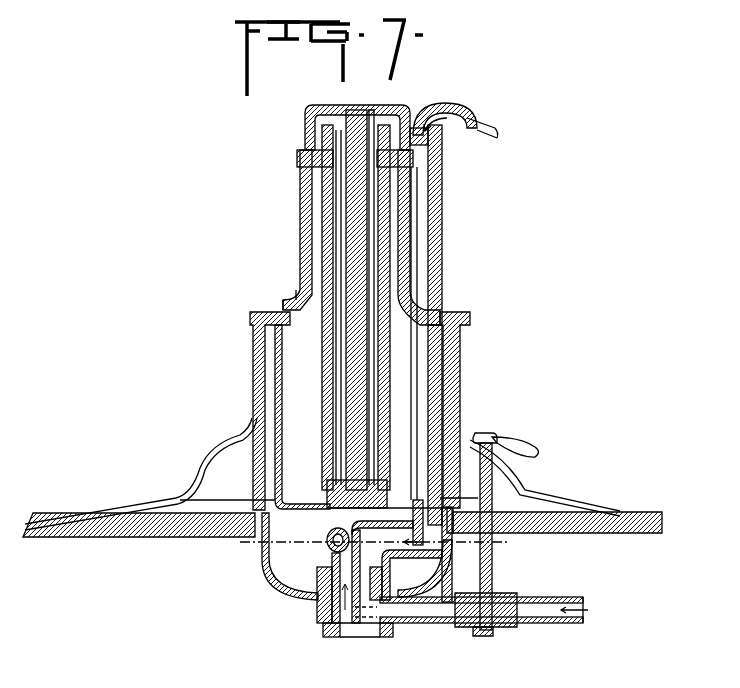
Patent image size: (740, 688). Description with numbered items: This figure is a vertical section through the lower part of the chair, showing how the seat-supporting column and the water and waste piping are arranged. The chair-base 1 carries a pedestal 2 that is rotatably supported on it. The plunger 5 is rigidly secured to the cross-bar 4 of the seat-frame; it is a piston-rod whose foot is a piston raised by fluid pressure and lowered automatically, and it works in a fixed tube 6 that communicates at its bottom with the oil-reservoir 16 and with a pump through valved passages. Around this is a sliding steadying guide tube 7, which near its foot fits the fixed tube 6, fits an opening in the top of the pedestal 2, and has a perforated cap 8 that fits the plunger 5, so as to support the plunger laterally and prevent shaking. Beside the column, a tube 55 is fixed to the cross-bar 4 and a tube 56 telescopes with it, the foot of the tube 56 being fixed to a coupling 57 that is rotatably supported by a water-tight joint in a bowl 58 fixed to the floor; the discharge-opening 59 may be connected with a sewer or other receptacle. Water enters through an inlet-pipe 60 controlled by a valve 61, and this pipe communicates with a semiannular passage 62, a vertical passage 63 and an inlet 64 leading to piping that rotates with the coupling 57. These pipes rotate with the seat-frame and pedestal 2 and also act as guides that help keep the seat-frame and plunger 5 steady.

The chair-base 1 is at (258, 438).
The pedestal 2 is at (300, 222).
The cross-bar 4 is at (376, 109).
The plunger 5 is at (355, 110).
The fixed tube 6 is at (306, 133).
The sliding steadying guide tube 7 is at (318, 283).
The perforated cap 8 is at (262, 547).
The oil-reservoir 16 is at (278, 413).
The tube 55 is at (441, 183).
The telescoping tube 56 is at (441, 228).
The coupling 57 is at (375, 554).
The bowl 58 is at (284, 556).
The discharge-opening 59 is at (340, 638).
The inlet-pipe 60 is at (510, 599).
The valve 61 is at (495, 594).
The semiannular passage 62 is at (393, 628).
The vertical passage 63 is at (332, 562).
The inlet 64 is at (329, 536).